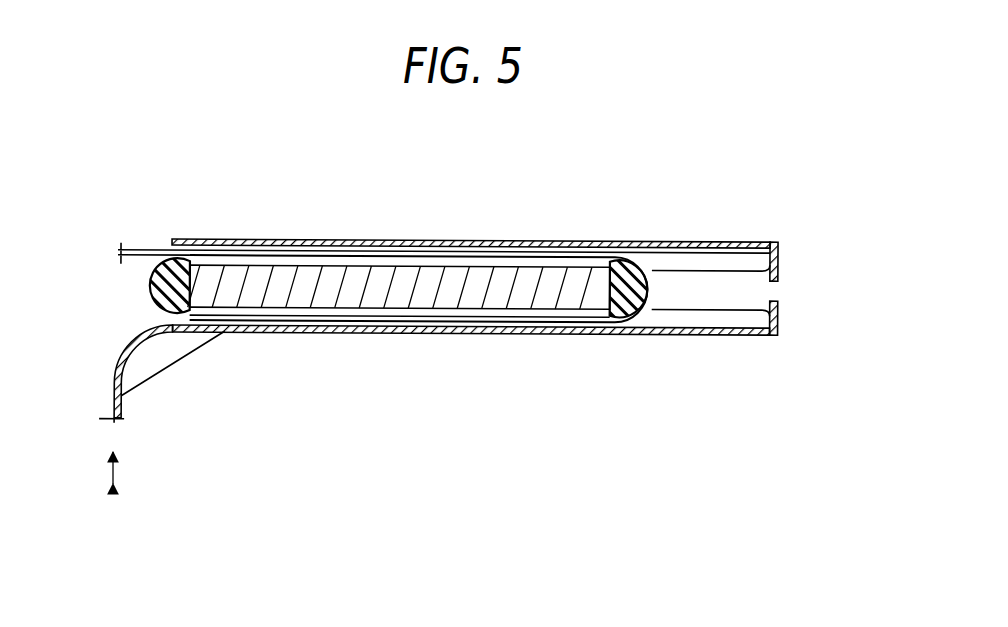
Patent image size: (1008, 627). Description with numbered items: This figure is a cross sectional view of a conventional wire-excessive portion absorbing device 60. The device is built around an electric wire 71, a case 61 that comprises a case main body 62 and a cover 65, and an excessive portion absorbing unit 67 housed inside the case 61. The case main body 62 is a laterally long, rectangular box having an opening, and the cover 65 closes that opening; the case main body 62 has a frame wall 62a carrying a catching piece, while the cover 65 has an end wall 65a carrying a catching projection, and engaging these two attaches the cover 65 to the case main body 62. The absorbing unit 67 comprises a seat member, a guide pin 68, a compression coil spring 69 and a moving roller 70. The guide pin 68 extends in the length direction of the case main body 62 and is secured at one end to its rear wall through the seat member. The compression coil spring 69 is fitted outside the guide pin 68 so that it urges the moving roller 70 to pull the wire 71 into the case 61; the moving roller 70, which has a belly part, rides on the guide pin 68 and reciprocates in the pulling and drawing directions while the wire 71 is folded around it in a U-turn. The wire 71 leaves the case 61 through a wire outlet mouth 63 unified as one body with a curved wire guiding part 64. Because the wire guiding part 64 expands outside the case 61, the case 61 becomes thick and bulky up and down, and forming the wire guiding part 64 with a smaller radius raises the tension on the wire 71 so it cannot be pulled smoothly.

The fixing device 60 is at (483, 224).
The case 61 is at (710, 157).
The case main body 62 is at (703, 332).
The frame wall 62a is at (779, 318).
The wire outlet mouth 63 is at (232, 322).
The wire guiding part 64 is at (143, 347).
The cover 65 is at (777, 244).
The end wall 65a is at (783, 271).
The excessive portion absorbing unit 67 is at (657, 258).
The guide pin 68 is at (312, 272).
The compression coil spring 69 is at (428, 296).
The moving roller 70 is at (628, 318).
The electric wire 71 is at (128, 411).